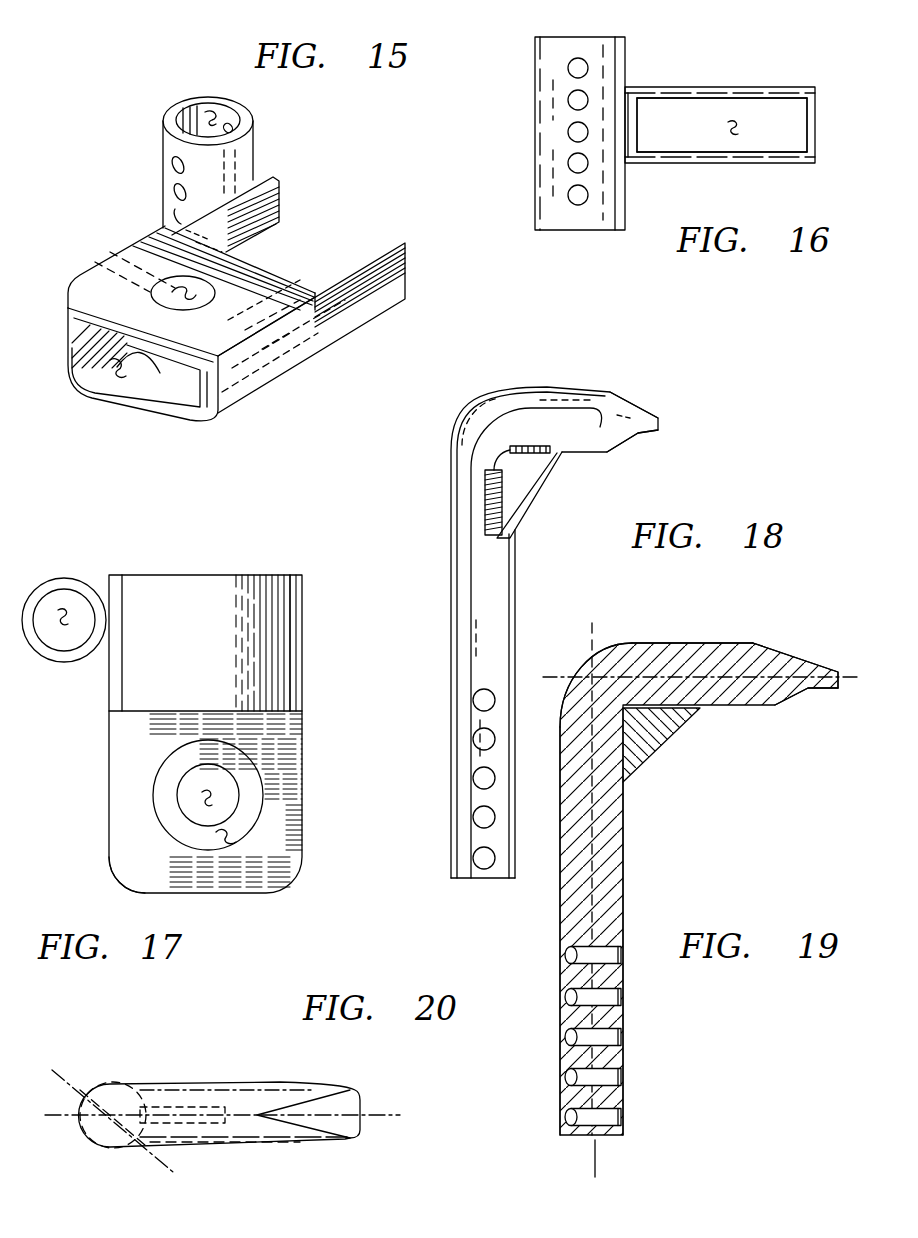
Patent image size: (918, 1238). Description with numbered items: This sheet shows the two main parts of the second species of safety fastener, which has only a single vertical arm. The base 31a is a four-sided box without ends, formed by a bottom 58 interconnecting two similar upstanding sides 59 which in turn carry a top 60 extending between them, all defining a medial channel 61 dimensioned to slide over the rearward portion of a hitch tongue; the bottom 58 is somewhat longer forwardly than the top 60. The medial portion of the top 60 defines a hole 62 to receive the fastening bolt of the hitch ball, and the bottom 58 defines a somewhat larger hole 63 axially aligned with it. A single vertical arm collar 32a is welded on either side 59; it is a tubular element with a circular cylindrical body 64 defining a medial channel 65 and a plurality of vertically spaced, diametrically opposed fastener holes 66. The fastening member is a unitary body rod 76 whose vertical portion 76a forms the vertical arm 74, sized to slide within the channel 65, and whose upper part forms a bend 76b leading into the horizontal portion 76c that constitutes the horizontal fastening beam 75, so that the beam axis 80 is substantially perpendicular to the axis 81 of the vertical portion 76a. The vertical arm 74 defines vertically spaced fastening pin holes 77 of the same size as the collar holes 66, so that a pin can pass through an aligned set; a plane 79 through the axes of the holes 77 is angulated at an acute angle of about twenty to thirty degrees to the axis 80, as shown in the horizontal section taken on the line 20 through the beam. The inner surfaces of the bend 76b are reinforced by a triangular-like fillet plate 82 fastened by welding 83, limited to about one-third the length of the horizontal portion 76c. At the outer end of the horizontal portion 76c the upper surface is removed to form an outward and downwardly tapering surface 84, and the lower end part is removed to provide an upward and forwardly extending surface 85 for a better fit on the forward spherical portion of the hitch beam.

In FIG. 15, the base 31a is at (285, 388).
In FIG. 16, the base 31a is at (655, 80).
In FIG. 17, the base 31a is at (308, 788).
In FIG. 15, the vertical arm collar 32a is at (158, 160).
In FIG. 16, the vertical arm collar 32a is at (530, 60).
In FIG. 17, the vertical arm collar 32a is at (66, 562).
In FIG. 15, the bottom 58 is at (305, 248).
In FIG. 16, the bottom 58 is at (647, 163).
In FIG. 17, the bottom 58 is at (250, 609).
In FIG. 15, the sides 59 is at (282, 192).
In FIG. 16, the sides 59 is at (637, 128).
In FIG. 17, the sides 59 is at (129, 689).
In FIG. 15, the top 60 is at (245, 283).
In FIG. 16, the top 60 is at (780, 85).
In FIG. 17, the top 60 is at (147, 850).
In FIG. 15, the medial channel 61 is at (118, 376).
In FIG. 16, the medial channel 61 is at (733, 127).
In FIG. 15, the hole 62 is at (168, 293).
In FIG. 17, the hole 62 is at (206, 790).
In FIG. 15, the hole 63 is at (158, 373).
In FIG. 17, the hole 63 is at (228, 835).
In FIG. 15, the cylindrical body 64 is at (221, 163).
In FIG. 16, the cylindrical body 64 is at (560, 110).
In FIG. 17, the cylindrical body 64 is at (82, 586).
In FIG. 15, the medial channel 65 is at (214, 115).
In FIG. 17, the medial channel 65 is at (62, 613).
In FIG. 15, the fastener holes 66 is at (235, 125).
In FIG. 16, the fastener holes 66 is at (577, 170).
In FIG. 18, the vertical arm 74 is at (523, 590).
In FIG. 19, the vertical arm 74 is at (557, 997).
In FIG. 20, the vertical arm 74 is at (73, 1140).
In FIG. 18, the horizontal fastening beam 75 is at (628, 387).
In FIG. 19, the horizontal fastening beam 75 is at (675, 637).
In FIG. 20, the horizontal fastening beam 75 is at (230, 1080).
In FIG. 18, the body rod 76 is at (447, 613).
In FIG. 19, the body rod 76 is at (612, 813).
In FIG. 20, the body rod 76 is at (98, 1133).
In FIG. 18, the vertical portion 76a is at (484, 658).
In FIG. 19, the vertical portion 76a is at (563, 1033).
In FIG. 18, the bend 76b is at (495, 419).
In FIG. 19, the bend 76b is at (603, 667).
In FIG. 18, the horizontal portion 76c is at (589, 426).
In FIG. 19, the horizontal portion 76c is at (707, 663).
In FIG. 18, the fastening pin holes 77 is at (484, 817).
In FIG. 19, the fastening pin holes 77 is at (605, 1036).
In FIG. 20, the fastening pin holes 77 is at (130, 1068).
In FIG. 20, the plane 79 is at (62, 1080).
In FIG. 19, the axis 80 is at (763, 675).
In FIG. 20, the axis 80 is at (377, 1113).
In FIG. 19, the axis 81 is at (598, 1165).
In FIG. 18, the fillet plate 82 is at (540, 489).
In FIG. 19, the fillet plate 82 is at (640, 750).
In FIG. 20, the fillet plate 82 is at (180, 1117).
In FIG. 18, the welding 83 is at (523, 450).
In FIG. 18, the tapering surface 84 is at (623, 428).
In FIG. 19, the tapering surface 84 is at (787, 695).
In FIG. 20, the tapering surface 84 is at (333, 1103).
In FIG. 18, the surface 85 is at (636, 434).
In FIG. 19, the surface 85 is at (807, 688).
In FIG. 18, the section line 20 is at (504, 350).